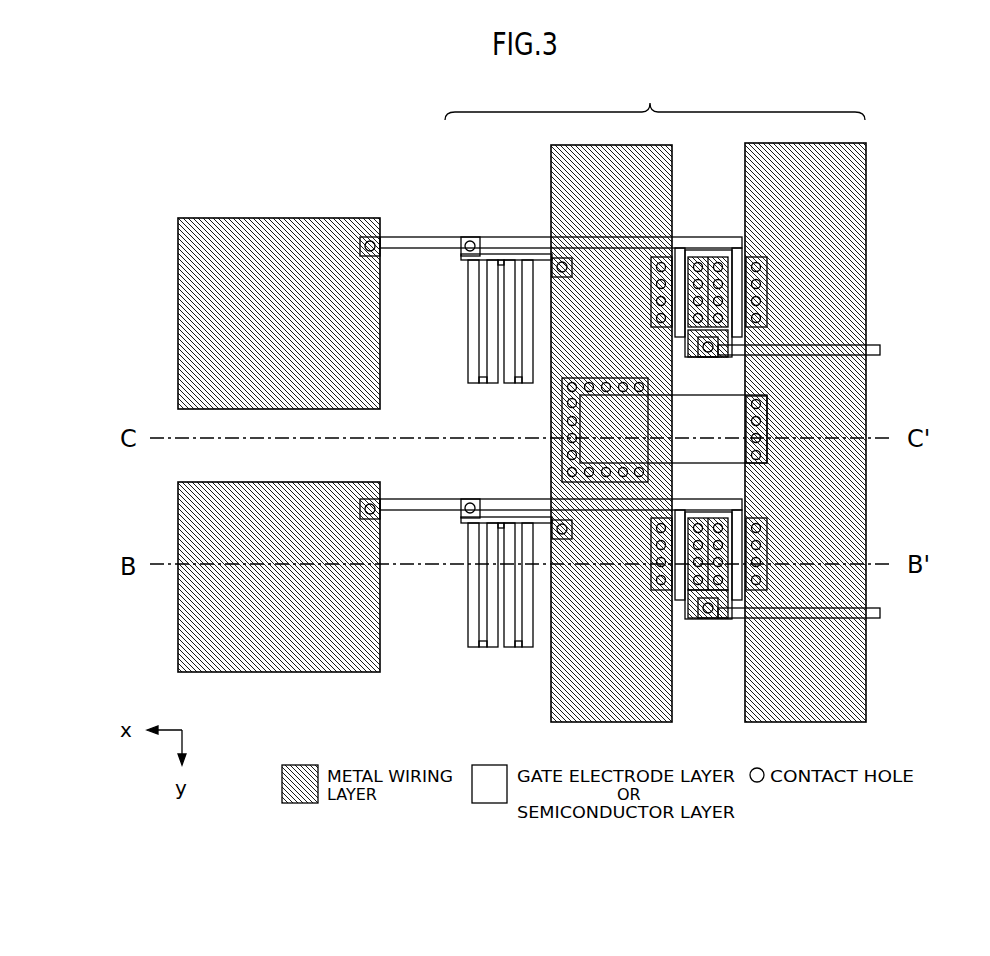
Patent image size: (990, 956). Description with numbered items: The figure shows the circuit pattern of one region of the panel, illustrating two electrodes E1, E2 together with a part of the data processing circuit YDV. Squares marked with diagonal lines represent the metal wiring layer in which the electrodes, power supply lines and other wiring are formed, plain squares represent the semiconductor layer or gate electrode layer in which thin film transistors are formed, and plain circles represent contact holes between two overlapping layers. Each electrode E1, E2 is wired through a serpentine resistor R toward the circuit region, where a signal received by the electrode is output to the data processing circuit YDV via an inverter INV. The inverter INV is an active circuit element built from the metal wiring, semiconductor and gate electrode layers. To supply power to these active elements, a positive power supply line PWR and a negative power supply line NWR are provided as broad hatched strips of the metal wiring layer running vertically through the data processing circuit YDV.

The electrode E1 is at (175, 333).
The electrode E2 is at (176, 626).
The positive power supply line PWR is at (550, 197).
The negative power supply line NWR is at (853, 202).
The inverter INV is at (765, 293).
The resistor R is at (470, 386).
The data processing circuit YDV is at (655, 96).